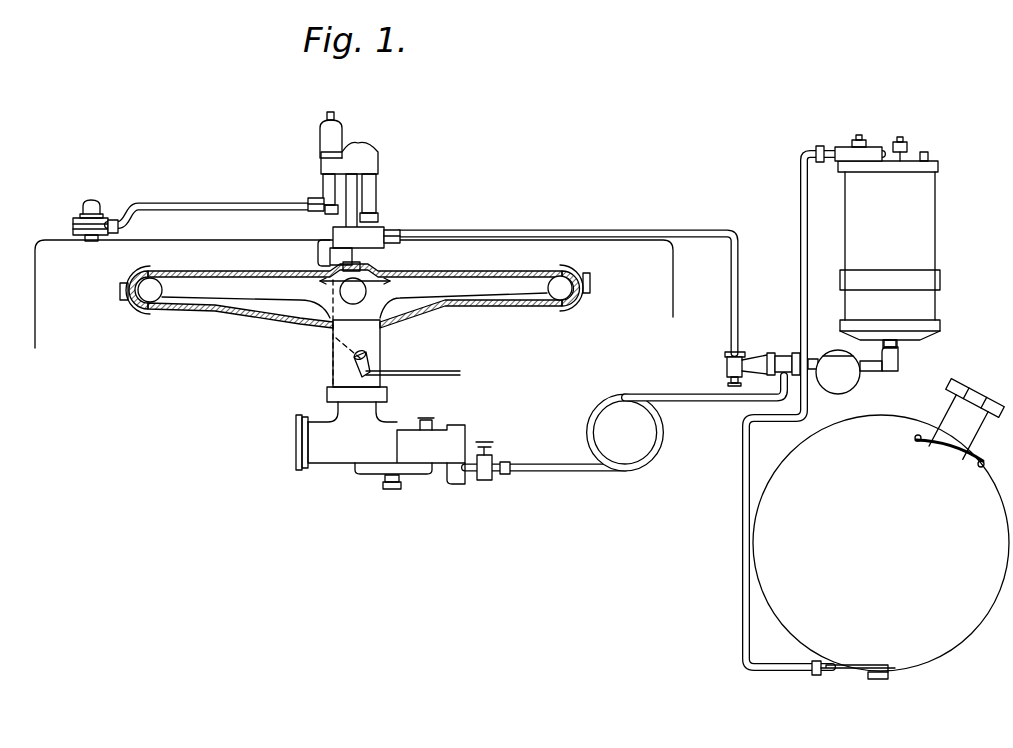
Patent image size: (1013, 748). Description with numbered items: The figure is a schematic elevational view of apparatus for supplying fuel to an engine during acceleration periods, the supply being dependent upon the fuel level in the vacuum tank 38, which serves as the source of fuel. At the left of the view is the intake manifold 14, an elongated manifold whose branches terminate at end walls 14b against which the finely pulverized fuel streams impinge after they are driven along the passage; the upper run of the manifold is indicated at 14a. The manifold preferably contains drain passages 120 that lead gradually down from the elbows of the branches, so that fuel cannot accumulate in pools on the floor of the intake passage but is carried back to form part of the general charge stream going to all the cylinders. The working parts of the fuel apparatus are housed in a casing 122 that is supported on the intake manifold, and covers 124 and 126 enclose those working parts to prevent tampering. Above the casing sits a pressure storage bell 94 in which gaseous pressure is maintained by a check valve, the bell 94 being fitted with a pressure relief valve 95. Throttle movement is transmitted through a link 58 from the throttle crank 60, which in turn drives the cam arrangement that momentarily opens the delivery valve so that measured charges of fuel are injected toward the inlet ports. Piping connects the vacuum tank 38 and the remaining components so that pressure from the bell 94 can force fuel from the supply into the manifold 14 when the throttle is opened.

The intake manifold 14 is at (353, 294).
The upper run of tube 14a is at (495, 268).
The end walls 14b is at (121, 290).
The vacuum tank 38 is at (915, 232).
The link 58 is at (318, 255).
The throttle crank 60 is at (372, 364).
The pressure storage bell 94 is at (320, 144).
The pressure relief valve 95 is at (325, 117).
The drain passages 120 is at (282, 314).
The casing 122 is at (362, 232).
The cover 124 is at (356, 162).
The cover 126 is at (340, 227).